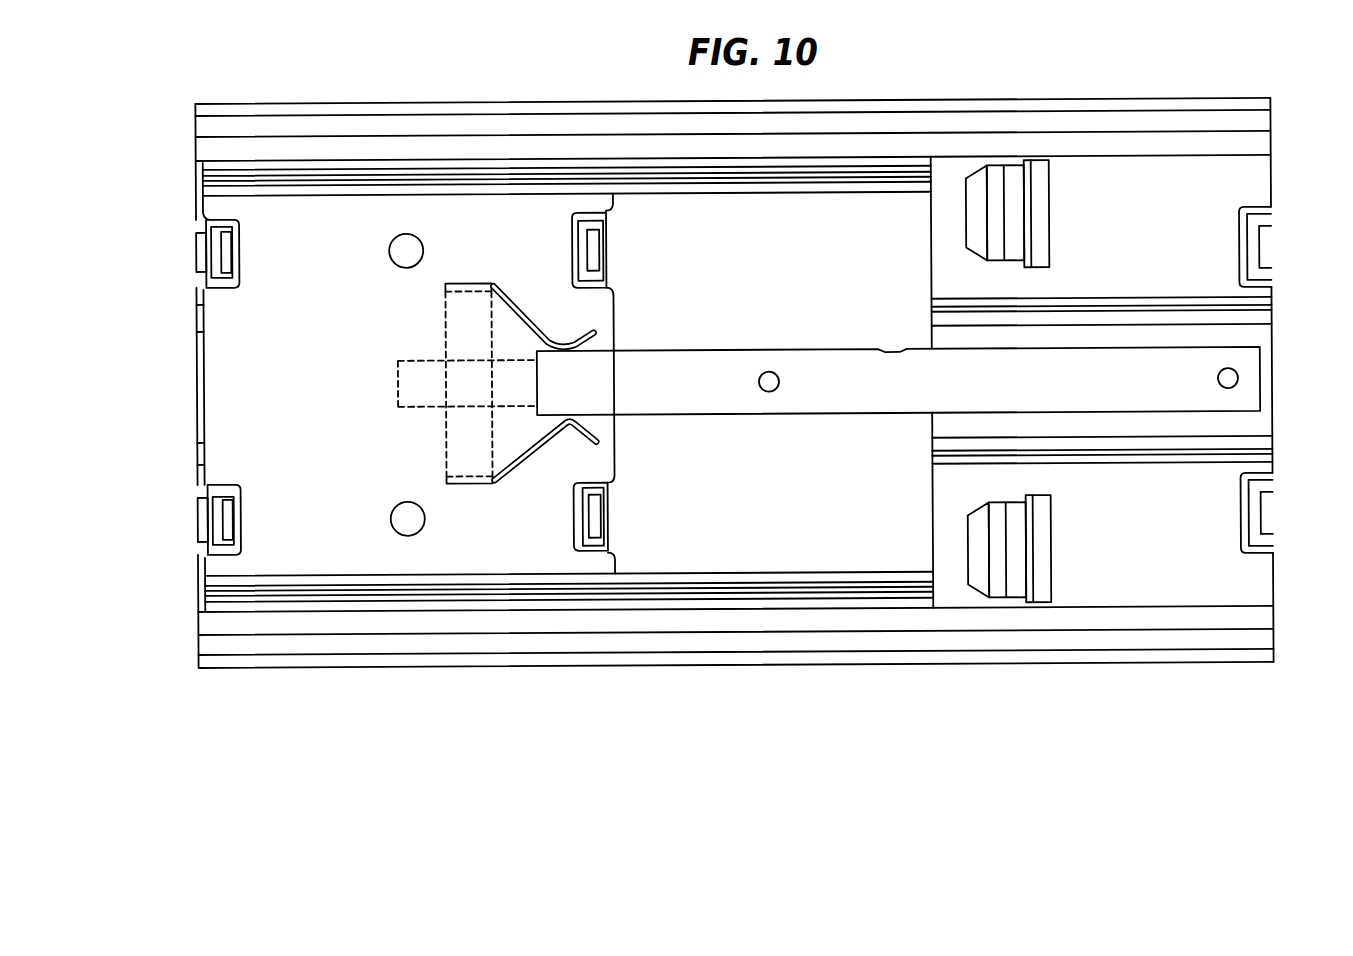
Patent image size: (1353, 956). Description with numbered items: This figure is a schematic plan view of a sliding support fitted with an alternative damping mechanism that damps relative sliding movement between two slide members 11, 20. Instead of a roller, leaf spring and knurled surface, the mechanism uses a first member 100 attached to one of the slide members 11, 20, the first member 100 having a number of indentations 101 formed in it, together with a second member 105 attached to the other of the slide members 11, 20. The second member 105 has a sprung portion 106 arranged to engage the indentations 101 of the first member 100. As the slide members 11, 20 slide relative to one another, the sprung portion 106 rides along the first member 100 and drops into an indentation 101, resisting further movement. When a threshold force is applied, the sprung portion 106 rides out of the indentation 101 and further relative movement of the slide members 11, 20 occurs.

The slide member 11 is at (1250, 184).
The slide member 20 is at (228, 394).
The first member 100 is at (1140, 410).
The indentation 101 is at (1215, 353).
The second member 105 is at (468, 467).
The sprung portion 106 is at (512, 298).